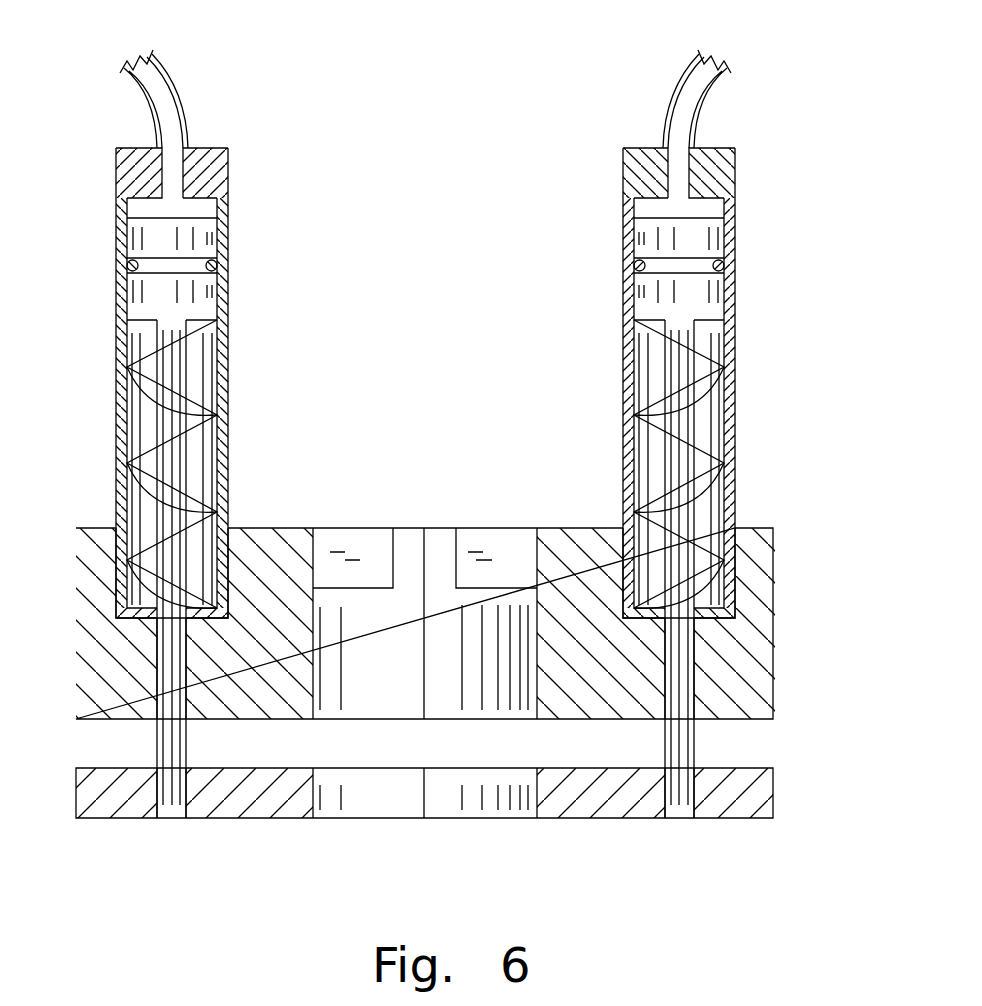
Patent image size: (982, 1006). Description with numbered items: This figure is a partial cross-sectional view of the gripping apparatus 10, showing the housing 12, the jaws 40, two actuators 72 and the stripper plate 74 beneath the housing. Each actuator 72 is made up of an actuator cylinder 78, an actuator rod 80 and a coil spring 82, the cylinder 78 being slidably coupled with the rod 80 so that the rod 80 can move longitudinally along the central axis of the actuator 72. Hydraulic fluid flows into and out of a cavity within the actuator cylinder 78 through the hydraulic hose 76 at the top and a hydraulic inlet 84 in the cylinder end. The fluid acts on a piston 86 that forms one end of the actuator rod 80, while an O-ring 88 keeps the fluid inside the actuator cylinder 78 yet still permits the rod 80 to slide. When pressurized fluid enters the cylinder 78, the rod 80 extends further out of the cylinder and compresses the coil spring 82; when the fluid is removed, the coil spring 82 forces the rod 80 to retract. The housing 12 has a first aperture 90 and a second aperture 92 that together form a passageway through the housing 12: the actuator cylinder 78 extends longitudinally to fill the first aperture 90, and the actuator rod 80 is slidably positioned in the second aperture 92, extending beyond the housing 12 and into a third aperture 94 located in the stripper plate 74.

The gripping apparatus 10 is at (762, 120).
The housing 12 is at (777, 529).
The jaws 40 is at (363, 540).
The actuator 72 is at (258, 212).
The stripper plate 74 is at (213, 836).
The hydraulic hose 76 is at (172, 80).
The actuator cylinder 78 is at (228, 356).
The actuator rod 80 is at (178, 743).
The coil spring 82 is at (122, 418).
The hydraulic inlet 84 is at (168, 188).
The piston 86 is at (160, 298).
The O-ring 88 is at (128, 265).
The first aperture 90 is at (236, 548).
The second aperture 92 is at (152, 668).
The third aperture 94 is at (152, 793).